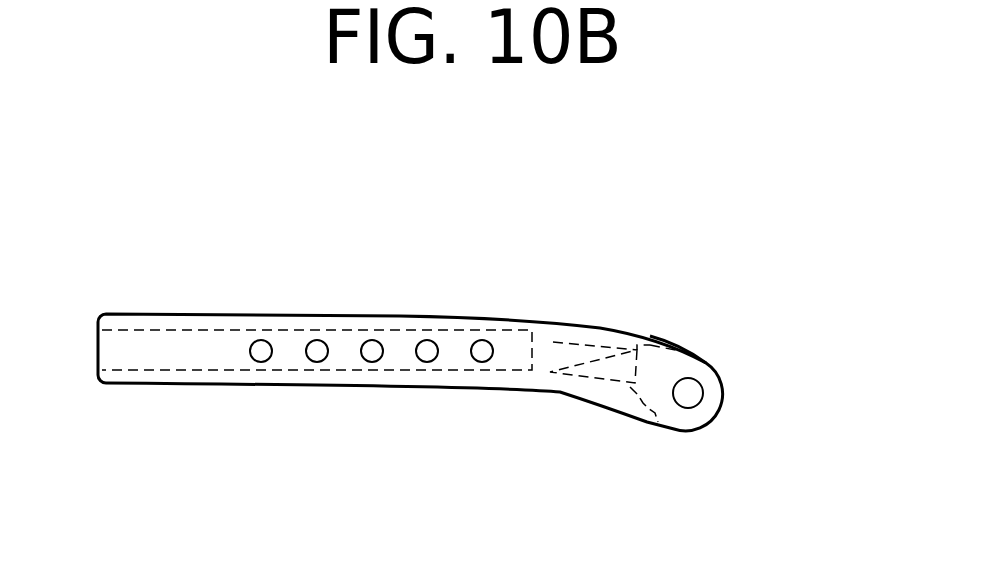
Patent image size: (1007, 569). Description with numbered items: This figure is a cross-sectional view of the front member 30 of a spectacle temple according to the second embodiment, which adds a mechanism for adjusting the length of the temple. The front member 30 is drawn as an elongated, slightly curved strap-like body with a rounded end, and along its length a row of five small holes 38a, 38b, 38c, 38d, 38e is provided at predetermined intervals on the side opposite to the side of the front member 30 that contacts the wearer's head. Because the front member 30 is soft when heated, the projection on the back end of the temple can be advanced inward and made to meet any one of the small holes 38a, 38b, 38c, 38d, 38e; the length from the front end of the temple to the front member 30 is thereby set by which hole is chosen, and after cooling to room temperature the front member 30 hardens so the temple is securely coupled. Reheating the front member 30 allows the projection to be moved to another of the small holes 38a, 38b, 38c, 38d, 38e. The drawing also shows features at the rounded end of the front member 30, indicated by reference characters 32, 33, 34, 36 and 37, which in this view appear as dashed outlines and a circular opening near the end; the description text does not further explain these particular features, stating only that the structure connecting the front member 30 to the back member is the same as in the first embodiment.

The front member 30 is at (293, 373).
The magnet 32 is at (593, 360).
The magnet 33 is at (660, 363).
The hole 34 is at (692, 393).
The tab 36 is at (642, 407).
The end portion 37 is at (683, 353).
The small hole 38a is at (260, 339).
The small hole 38b is at (317, 339).
The small hole 38c is at (373, 339).
The small hole 38d is at (423, 339).
The small hole 38e is at (478, 339).